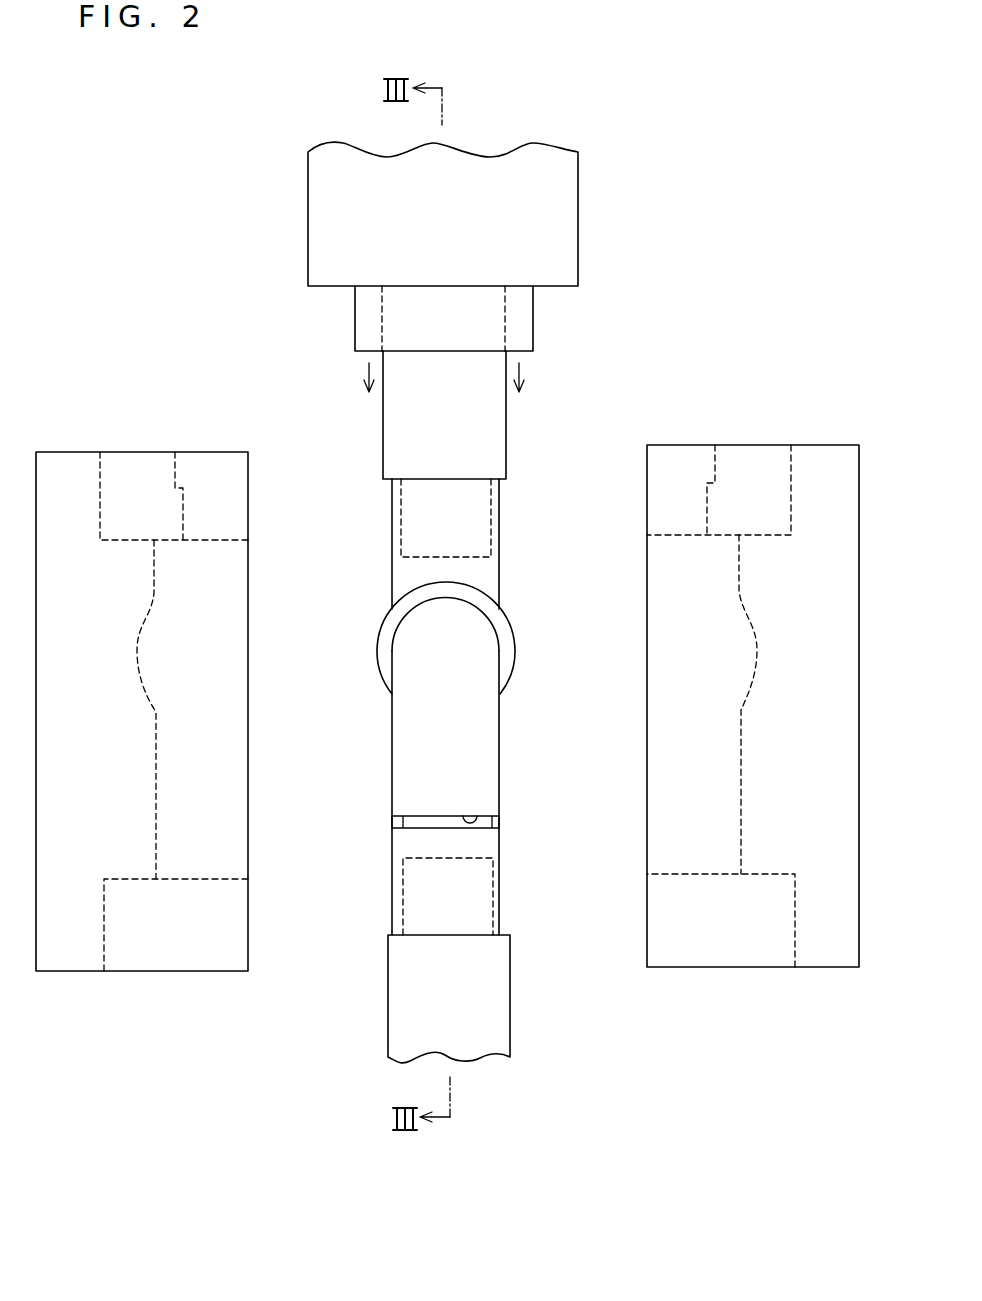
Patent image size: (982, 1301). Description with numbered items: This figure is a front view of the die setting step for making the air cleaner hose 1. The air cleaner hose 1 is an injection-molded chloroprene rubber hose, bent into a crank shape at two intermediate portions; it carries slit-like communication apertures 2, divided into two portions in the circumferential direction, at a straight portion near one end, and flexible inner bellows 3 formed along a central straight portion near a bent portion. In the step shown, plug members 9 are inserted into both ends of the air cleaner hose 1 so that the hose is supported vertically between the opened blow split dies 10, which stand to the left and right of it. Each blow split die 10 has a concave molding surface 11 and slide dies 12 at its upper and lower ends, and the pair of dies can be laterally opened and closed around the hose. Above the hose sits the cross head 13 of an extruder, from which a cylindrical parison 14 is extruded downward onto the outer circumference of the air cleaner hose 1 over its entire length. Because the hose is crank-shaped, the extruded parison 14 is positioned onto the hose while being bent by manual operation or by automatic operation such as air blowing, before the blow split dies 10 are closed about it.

The air cleaner hose 1 is at (492, 727).
The communication apertures 2 is at (477, 818).
The inner bellows 3 is at (517, 647).
The plug members 9 is at (497, 439).
The blow split dies 10 is at (65, 452).
The concave molding surface 11 is at (156, 760).
The slide dies 12 is at (100, 477).
The cross head 13 is at (313, 217).
The parison 14 is at (355, 328).